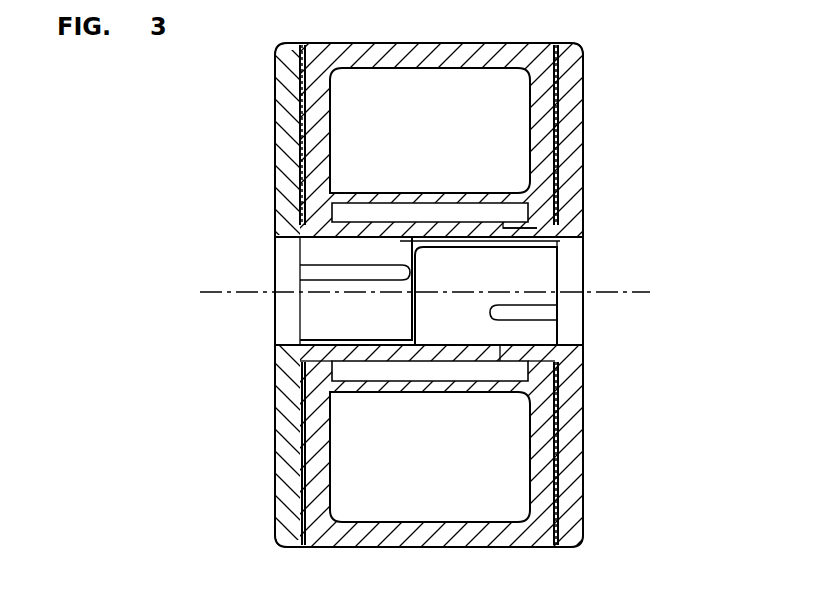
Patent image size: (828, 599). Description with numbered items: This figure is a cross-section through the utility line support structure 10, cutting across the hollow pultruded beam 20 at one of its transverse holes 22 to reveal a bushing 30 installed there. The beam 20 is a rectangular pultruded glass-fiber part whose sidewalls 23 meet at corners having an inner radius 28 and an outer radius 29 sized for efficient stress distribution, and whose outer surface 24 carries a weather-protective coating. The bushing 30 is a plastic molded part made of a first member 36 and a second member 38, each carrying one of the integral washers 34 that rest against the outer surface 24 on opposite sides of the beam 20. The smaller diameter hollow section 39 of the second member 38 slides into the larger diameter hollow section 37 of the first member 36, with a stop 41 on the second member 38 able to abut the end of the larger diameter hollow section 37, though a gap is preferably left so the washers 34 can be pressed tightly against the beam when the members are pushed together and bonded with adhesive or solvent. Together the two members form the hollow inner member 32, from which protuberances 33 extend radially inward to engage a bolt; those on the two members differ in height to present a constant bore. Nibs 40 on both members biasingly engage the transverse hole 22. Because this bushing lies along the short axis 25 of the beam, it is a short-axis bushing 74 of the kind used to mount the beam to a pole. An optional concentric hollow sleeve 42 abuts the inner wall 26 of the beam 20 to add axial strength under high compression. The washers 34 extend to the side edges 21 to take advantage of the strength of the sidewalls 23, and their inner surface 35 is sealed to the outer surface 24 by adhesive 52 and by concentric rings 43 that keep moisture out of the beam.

The utility line support structure 10 is at (592, 42).
The hollow pultruded beam 20 is at (585, 198).
The side edges 21 is at (300, 552).
The transverse holes 22 is at (300, 238).
The sidewalls 23 is at (482, 43).
The outer surface 24 is at (580, 422).
The short axis 25 is at (648, 292).
The inner wall 26 is at (528, 470).
The inner radius 28 is at (350, 72).
The outer radius 29 is at (304, 45).
The bushing 30 is at (266, 482).
The hollow inner member 32 is at (400, 366).
The protuberances 33 is at (318, 271).
The integral washers 34 is at (588, 120).
The inner surface 35 is at (522, 385).
The first member 36 is at (362, 248).
The larger diameter hollow section 37 is at (400, 226).
The second member 38 is at (540, 272).
The smaller diameter hollow section 39 is at (458, 242).
The nibs 40 is at (302, 366).
The stop 41 is at (498, 355).
The concentric hollow sleeve 42 is at (458, 228).
The concentric rings 43 is at (298, 59).
The adhesive 52 is at (562, 475).
The short-axis bushings 74 is at (594, 498).